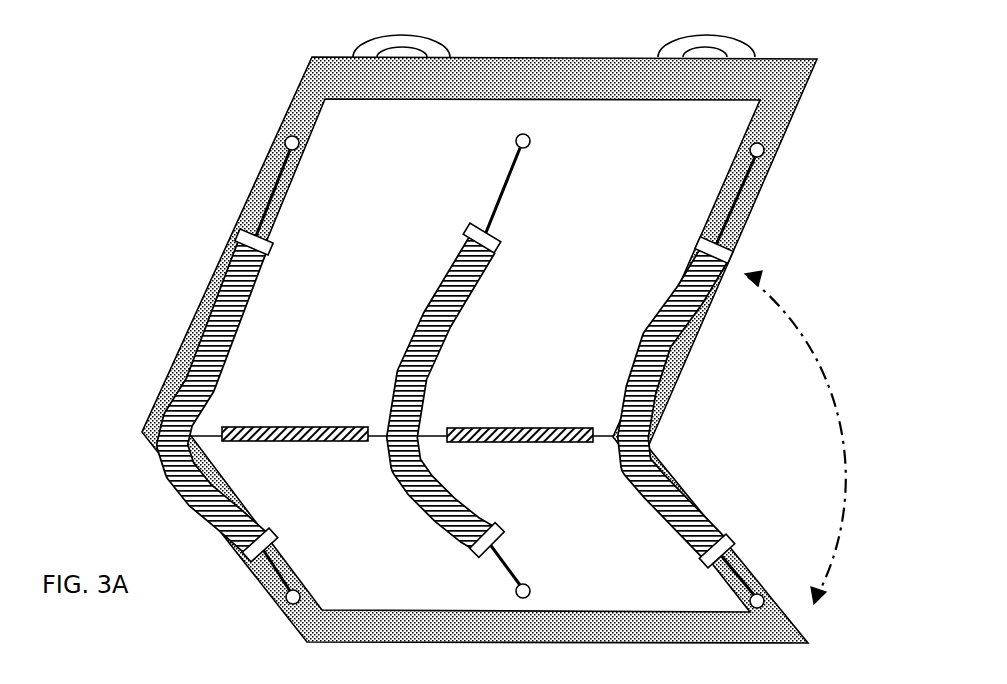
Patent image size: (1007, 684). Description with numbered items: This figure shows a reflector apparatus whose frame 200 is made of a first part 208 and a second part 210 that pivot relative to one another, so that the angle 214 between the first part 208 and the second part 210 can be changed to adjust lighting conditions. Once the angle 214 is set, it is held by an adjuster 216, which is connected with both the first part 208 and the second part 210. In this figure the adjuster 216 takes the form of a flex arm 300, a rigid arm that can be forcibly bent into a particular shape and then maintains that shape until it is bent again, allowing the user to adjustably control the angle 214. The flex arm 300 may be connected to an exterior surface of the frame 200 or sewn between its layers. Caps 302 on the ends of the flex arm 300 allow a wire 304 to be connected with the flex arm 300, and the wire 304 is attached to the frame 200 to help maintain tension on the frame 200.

The frame 200 is at (303, 80).
The first part 208 is at (780, 143).
The second part 210 is at (297, 627).
The angle 214 is at (838, 395).
The adjuster 216 is at (168, 369).
The flex arm 300 is at (215, 393).
The caps 302 is at (237, 230).
The wire 304 is at (505, 190).